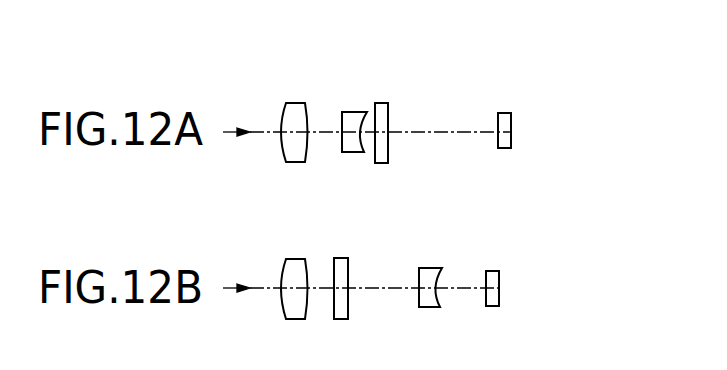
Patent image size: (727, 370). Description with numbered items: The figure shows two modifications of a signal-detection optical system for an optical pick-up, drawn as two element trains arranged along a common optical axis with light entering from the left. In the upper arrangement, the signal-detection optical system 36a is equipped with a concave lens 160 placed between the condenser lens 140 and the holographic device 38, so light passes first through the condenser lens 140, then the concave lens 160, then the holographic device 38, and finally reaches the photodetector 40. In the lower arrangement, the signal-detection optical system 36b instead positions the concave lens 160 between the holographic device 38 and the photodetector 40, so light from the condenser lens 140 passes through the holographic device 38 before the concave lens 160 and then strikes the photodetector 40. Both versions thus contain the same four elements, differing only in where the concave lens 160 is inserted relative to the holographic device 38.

In FIG. 12A, the signal-detection optical system 36a is at (458, 66).
In FIG. 12B, the signal-detection optical system 36b is at (509, 220).
In FIG. 12A, the condenser lens 140 is at (293, 103).
In FIG. 12B, the condenser lens 140 is at (293, 259).
In FIG. 12A, the concave lens 160 is at (355, 112).
In FIG. 12B, the concave lens 160 is at (432, 268).
In FIG. 12A, the holographic device 38 is at (384, 103).
In FIG. 12B, the holographic device 38 is at (344, 258).
In FIG. 12A, the photodetector 40 is at (503, 113).
In FIG. 12B, the photodetector 40 is at (492, 271).